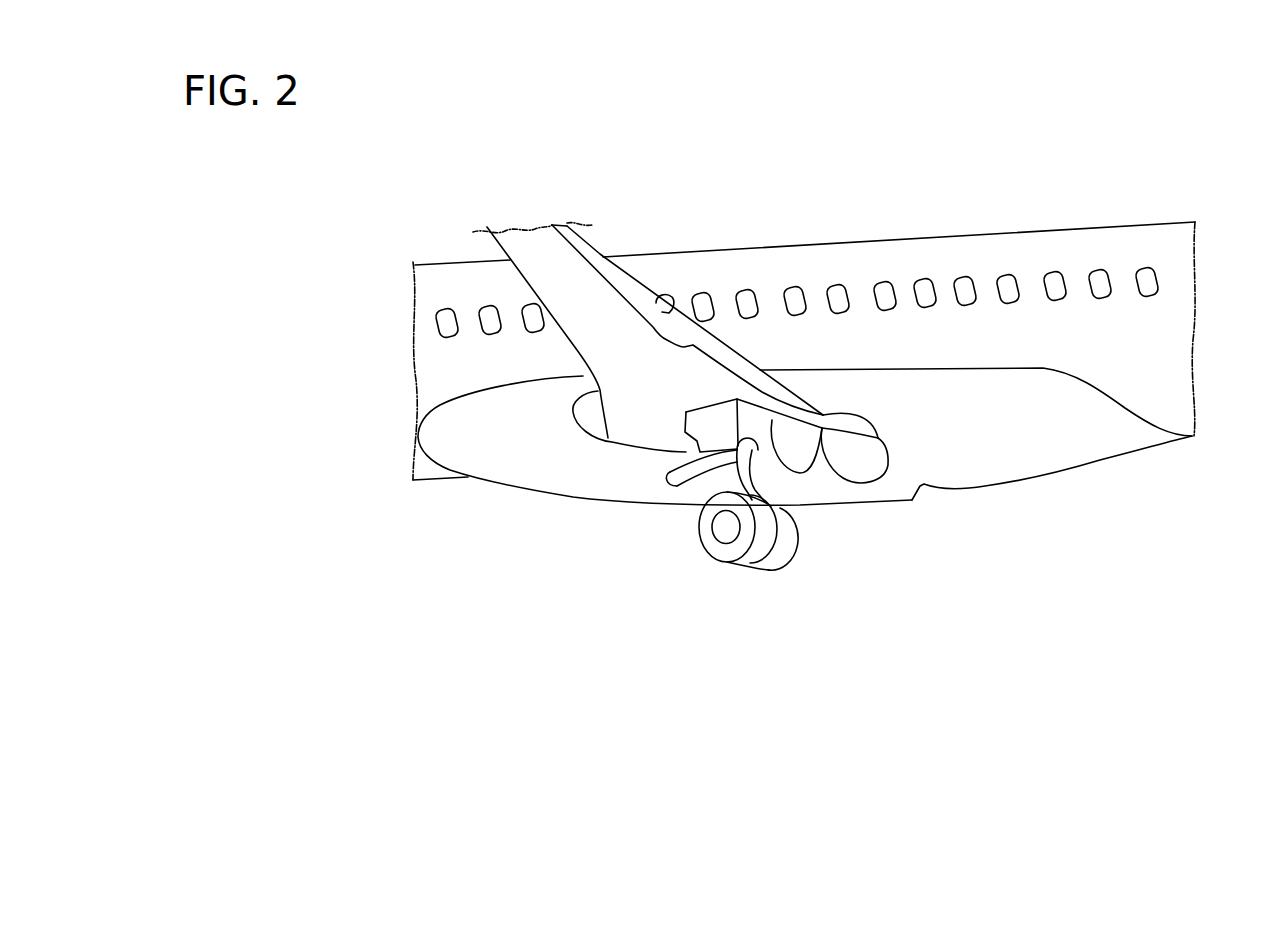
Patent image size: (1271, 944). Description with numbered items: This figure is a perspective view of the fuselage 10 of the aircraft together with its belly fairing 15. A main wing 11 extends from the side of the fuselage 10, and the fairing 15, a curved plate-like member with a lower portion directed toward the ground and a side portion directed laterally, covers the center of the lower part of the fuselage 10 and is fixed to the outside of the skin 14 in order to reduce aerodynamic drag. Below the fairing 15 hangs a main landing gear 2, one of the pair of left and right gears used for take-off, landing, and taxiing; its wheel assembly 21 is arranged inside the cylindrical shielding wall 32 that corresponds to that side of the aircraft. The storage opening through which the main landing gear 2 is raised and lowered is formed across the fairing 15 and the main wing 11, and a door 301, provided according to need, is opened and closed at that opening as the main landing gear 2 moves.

The fuselage 10 is at (1030, 230).
The main wing 11 is at (590, 242).
The skin 14 is at (1177, 405).
The fairing 15 is at (1027, 465).
The main landing gear 2 is at (764, 515).
The wheel assembly 21 is at (778, 570).
The shielding wall 32 is at (814, 472).
The door 301 is at (676, 488).